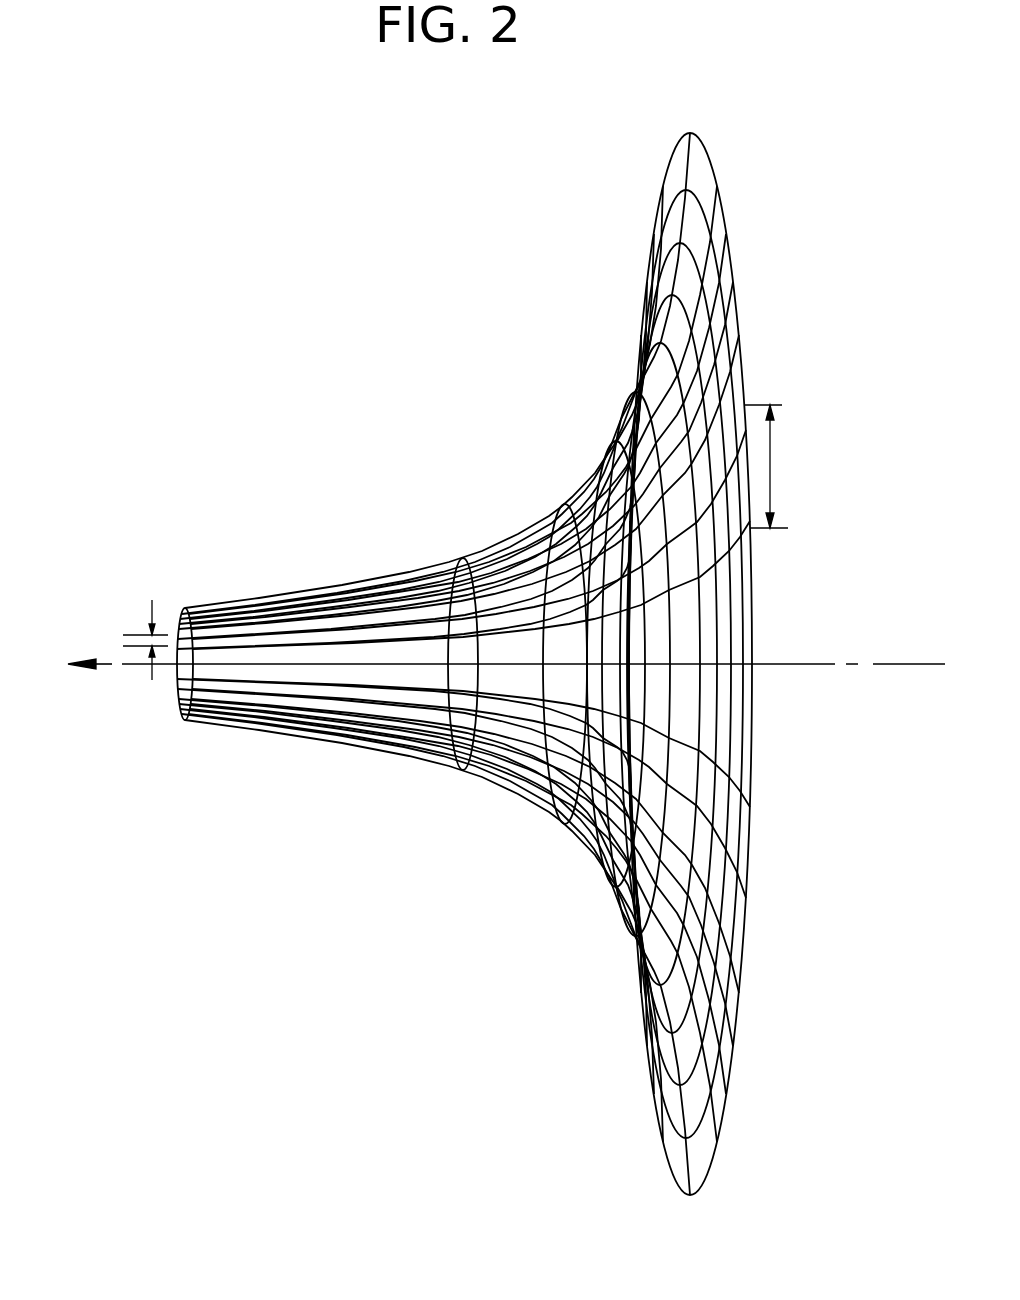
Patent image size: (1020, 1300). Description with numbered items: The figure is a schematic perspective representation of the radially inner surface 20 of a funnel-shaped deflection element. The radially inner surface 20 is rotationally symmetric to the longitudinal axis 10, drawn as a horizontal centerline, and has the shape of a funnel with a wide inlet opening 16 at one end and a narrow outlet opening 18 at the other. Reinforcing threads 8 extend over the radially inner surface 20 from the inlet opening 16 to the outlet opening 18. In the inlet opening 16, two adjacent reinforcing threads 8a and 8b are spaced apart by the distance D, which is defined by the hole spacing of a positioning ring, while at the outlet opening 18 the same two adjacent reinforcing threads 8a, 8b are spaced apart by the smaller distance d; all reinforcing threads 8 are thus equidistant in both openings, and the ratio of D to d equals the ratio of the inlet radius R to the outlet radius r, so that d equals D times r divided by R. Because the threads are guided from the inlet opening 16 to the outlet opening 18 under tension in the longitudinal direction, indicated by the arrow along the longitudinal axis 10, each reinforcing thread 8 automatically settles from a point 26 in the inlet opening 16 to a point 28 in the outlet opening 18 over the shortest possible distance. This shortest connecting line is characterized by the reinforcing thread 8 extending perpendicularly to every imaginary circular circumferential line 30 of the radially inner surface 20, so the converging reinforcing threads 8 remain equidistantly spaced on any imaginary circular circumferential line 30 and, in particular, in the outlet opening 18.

The reinforcing threads 8 is at (727, 335).
The reinforcing thread 8a is at (742, 433).
The reinforcing thread 8b is at (737, 547).
The longitudinal axis 10 is at (905, 665).
The inlet opening 16 is at (748, 868).
The outlet opening 18 is at (178, 606).
The radially inner surface 20 is at (463, 557).
The point 26 is at (750, 797).
The point 28 is at (180, 694).
The imaginary circular circumferential line 30 is at (668, 690).